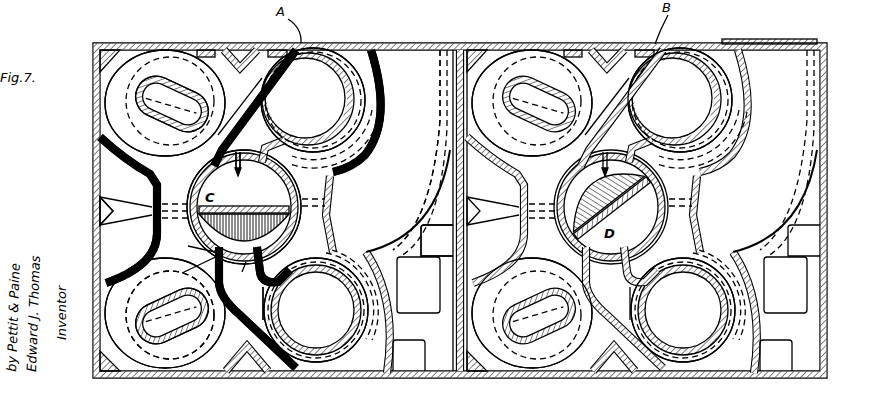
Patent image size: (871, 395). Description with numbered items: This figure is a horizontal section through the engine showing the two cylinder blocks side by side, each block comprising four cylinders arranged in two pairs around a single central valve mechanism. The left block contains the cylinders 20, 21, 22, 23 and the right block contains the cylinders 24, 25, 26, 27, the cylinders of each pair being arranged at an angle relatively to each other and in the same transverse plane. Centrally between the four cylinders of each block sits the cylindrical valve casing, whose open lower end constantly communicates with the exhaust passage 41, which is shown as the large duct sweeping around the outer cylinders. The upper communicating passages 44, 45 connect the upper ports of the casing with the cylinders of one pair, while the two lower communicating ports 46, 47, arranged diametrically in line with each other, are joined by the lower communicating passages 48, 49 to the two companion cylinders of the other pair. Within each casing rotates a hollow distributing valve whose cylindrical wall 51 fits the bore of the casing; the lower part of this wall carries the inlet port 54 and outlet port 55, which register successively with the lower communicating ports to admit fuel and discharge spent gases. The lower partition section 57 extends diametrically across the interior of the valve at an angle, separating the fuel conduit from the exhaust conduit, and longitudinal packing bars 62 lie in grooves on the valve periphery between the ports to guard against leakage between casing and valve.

The cylinder 20 is at (165, 313).
The cylinder 21 is at (165, 103).
The cylinder 22 is at (375, 352).
The cylinder 23 is at (360, 106).
The cylinder 24 is at (532, 313).
The cylinder 25 is at (532, 103).
The cylinder 26 is at (683, 310).
The cylinder 27 is at (680, 100).
The exhaust passage 41 is at (412, 78).
The communicating passage 44 is at (330, 315).
The communicating passage 45 is at (331, 103).
The lower communicating port 46 is at (420, 268).
The lower communicating port 47 is at (613, 170).
The lower communicating passage 48 is at (423, 307).
The lower communicating passage 49 is at (422, 108).
The cylindrical body or wall 51 is at (308, 192).
The lower inlet port 54 is at (360, 178).
The lower outlet port 55 is at (205, 170).
The lower partition section 57 is at (645, 198).
The longitudinal packing bars 62 is at (575, 244).